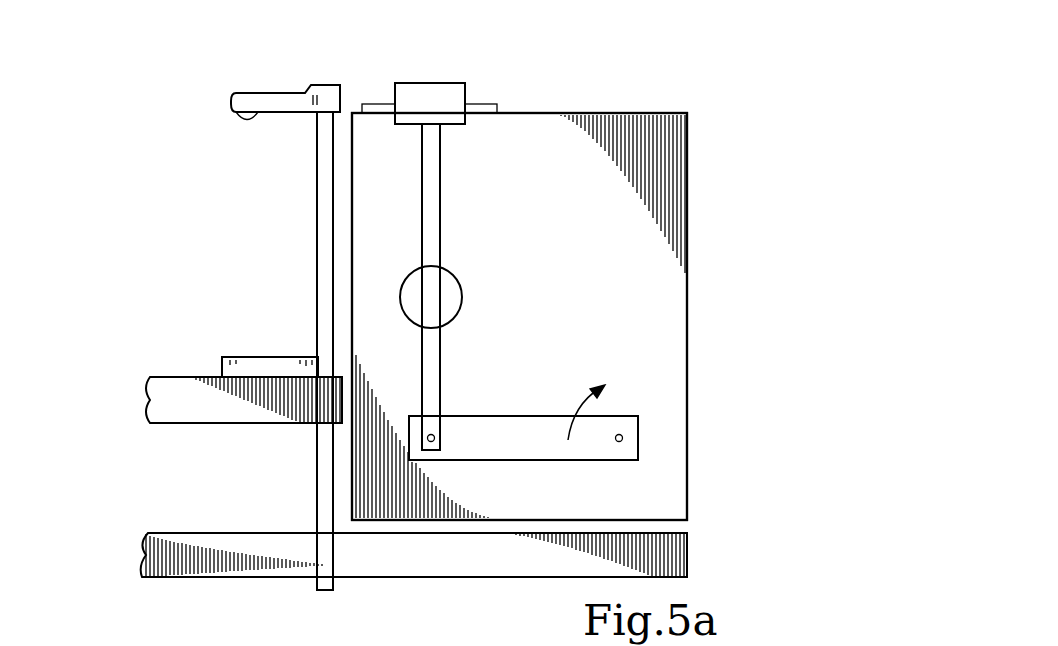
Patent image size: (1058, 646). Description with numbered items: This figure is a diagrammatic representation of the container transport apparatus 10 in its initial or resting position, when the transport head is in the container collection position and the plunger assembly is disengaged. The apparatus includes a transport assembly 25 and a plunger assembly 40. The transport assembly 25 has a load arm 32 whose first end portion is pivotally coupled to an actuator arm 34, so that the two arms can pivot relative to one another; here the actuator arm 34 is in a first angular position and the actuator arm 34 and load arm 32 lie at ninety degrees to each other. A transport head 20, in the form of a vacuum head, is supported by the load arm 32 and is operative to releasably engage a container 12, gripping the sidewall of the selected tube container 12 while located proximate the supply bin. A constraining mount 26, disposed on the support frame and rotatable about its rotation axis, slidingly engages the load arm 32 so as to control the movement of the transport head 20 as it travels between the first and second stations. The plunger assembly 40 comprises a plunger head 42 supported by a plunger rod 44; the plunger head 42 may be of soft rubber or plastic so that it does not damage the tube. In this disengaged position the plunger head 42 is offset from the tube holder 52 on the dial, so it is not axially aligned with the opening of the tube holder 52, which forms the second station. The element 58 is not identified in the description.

The transport apparatus 10 is at (728, 110).
The container 12 is at (488, 108).
The transport head 20 is at (416, 98).
The transport assembly 25 is at (511, 465).
The constraining mount 26 is at (446, 288).
The load arm 32 is at (432, 372).
The actuator arm 34 is at (483, 425).
The plunger assembly 40 is at (296, 522).
The plunger head 42 is at (240, 122).
The plunger rod 44 is at (326, 224).
The tube holder 52 is at (233, 357).
The bar 58 is at (170, 398).